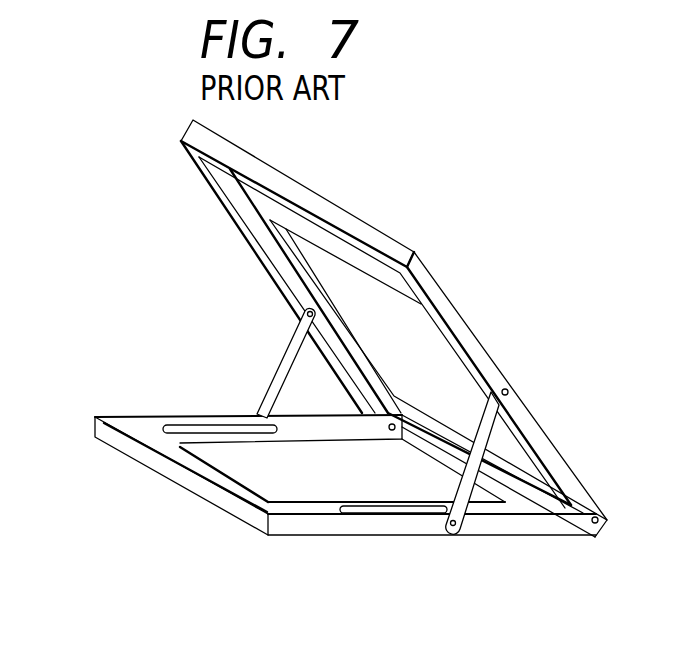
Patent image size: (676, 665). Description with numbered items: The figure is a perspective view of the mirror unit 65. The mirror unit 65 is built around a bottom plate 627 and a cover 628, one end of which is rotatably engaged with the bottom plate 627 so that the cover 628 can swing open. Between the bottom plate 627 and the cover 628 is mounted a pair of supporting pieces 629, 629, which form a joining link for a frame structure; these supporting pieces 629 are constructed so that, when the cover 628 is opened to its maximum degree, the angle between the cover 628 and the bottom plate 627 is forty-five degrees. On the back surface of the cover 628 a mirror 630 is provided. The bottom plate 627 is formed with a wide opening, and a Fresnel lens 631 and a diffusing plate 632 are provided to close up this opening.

The mirror unit 65 is at (112, 182).
The bottom plate 627 is at (168, 444).
The cover 628 is at (432, 286).
The supporting pieces 629 is at (290, 355).
The mirror 630 is at (306, 258).
The Fresnel lens 631 is at (256, 477).
The diffusing plate 632 is at (305, 469).